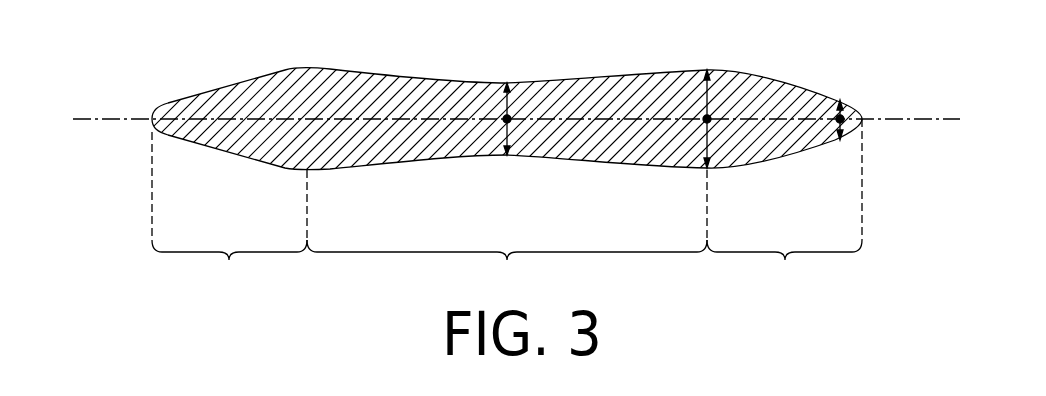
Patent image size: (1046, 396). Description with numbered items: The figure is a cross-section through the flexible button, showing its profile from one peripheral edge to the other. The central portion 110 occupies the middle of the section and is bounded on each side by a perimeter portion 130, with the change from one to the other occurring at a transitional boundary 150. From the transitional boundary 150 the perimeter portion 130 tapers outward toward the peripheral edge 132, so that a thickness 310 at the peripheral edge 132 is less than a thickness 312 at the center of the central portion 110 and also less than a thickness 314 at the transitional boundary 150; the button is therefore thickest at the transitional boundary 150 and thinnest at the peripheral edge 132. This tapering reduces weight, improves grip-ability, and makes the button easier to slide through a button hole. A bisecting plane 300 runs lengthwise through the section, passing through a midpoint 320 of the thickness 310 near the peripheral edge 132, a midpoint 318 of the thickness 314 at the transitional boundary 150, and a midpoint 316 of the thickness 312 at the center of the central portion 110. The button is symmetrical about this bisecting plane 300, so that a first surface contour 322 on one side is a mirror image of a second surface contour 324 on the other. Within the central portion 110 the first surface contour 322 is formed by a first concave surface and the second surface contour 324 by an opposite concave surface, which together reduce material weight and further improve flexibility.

The bisecting plane 300 is at (118, 122).
The central portion 110 is at (412, 75).
The perimeter portion 130 is at (507, 206).
The peripheral edge 132 is at (150, 108).
The transitional boundary 150 is at (305, 68).
The thickness of the peripheral edge 310 is at (852, 110).
The thickness at the center of the central portion 312 is at (513, 102).
The thickness at the transitional boundary 314 is at (715, 100).
The midpoint of the center thickness 316 is at (505, 119).
The midpoint of the transitional boundary thickness 318 is at (705, 119).
The midpoint of the peripheral edge thickness 320 is at (838, 118).
The first surface contour 322 is at (231, 60).
The second surface contour 324 is at (245, 186).